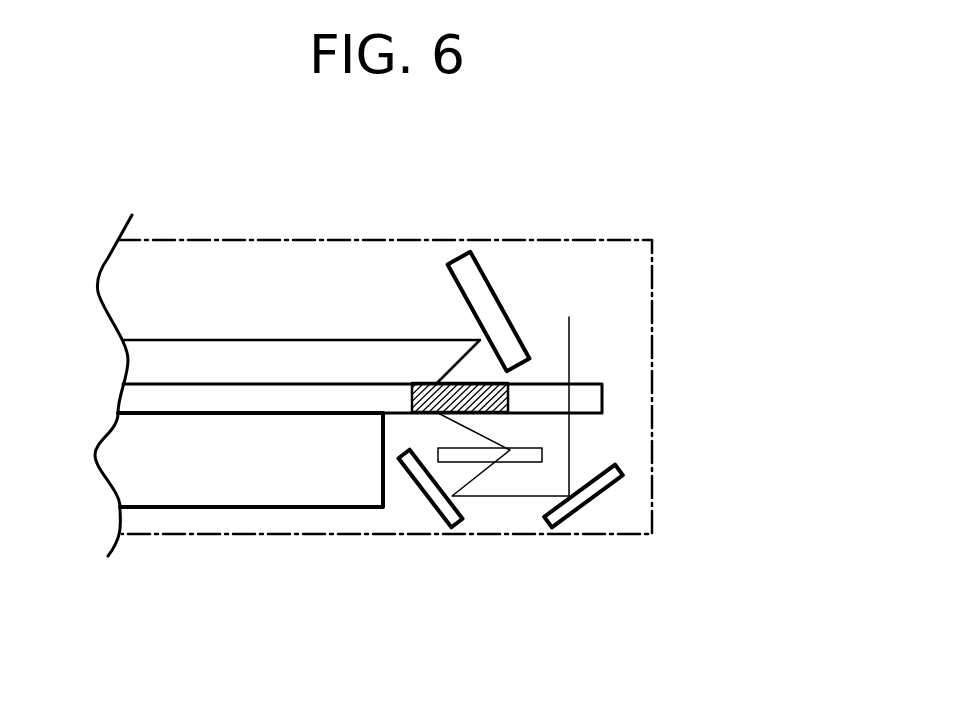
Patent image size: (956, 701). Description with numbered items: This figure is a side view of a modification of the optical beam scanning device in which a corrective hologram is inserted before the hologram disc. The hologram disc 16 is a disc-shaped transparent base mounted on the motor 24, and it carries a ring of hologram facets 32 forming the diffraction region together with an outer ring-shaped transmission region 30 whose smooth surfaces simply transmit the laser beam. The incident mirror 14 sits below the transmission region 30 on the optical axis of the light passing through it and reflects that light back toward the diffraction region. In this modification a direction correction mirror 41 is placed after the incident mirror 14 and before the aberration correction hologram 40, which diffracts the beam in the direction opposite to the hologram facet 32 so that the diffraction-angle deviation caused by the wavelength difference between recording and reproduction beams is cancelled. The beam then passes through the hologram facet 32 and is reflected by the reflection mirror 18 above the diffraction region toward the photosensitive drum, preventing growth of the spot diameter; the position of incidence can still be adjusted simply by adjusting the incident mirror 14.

The incident mirror 14 is at (587, 491).
The hologram disc 16 is at (240, 400).
The reflection mirror 18 is at (487, 307).
The motor 24 is at (225, 482).
The transmission region 30 is at (588, 397).
The hologram facet 32 is at (430, 383).
The aberration correction hologram 40 is at (527, 452).
The direction correction mirror 41 is at (432, 490).